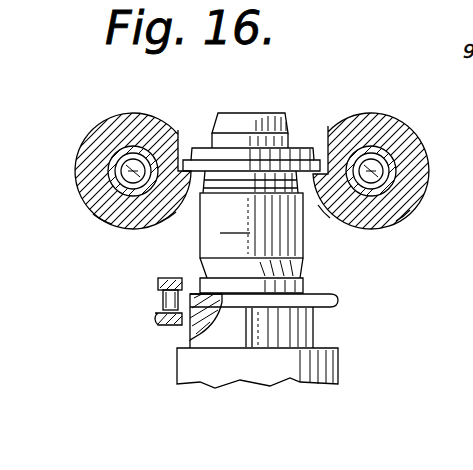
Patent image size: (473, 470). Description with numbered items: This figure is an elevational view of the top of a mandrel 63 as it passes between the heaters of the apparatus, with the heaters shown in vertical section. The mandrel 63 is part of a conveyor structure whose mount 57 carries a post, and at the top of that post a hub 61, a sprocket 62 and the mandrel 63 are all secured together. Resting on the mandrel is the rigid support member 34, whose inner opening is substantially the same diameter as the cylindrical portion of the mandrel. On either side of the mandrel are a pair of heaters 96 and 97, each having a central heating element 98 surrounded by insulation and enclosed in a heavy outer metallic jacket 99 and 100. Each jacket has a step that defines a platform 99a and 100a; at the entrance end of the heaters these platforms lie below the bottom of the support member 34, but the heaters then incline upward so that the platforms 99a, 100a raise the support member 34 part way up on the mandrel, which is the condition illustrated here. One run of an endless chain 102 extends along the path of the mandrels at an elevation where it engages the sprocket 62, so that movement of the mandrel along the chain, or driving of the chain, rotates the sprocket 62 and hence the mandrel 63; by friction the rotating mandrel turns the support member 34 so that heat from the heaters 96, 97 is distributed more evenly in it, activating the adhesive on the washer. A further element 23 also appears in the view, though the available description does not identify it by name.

The spindle cap 23 is at (299, 148).
The support member 34 is at (225, 166).
The mount 57 is at (187, 368).
The hub 61 is at (295, 335).
The sprocket 62 is at (335, 303).
The mandrel 63 is at (251, 232).
The heater 96 is at (383, 113).
The heater 97 is at (110, 113).
The central heating element 98 is at (115, 162).
The outer metallic jacket 99 is at (395, 220).
The platform 99a is at (324, 207).
The outer metallic jacket 100 is at (100, 217).
The platform 100a is at (170, 220).
The endless chain 102 is at (160, 322).